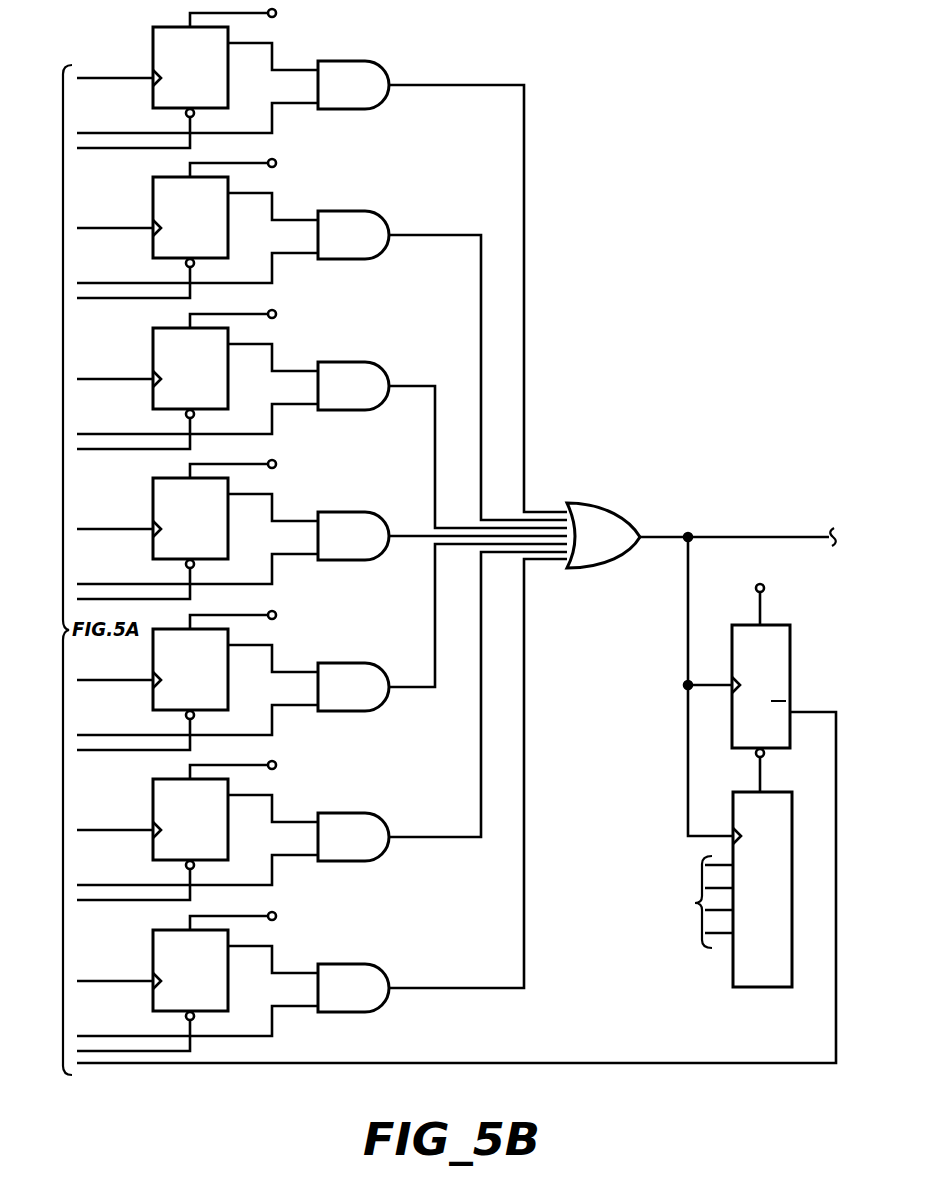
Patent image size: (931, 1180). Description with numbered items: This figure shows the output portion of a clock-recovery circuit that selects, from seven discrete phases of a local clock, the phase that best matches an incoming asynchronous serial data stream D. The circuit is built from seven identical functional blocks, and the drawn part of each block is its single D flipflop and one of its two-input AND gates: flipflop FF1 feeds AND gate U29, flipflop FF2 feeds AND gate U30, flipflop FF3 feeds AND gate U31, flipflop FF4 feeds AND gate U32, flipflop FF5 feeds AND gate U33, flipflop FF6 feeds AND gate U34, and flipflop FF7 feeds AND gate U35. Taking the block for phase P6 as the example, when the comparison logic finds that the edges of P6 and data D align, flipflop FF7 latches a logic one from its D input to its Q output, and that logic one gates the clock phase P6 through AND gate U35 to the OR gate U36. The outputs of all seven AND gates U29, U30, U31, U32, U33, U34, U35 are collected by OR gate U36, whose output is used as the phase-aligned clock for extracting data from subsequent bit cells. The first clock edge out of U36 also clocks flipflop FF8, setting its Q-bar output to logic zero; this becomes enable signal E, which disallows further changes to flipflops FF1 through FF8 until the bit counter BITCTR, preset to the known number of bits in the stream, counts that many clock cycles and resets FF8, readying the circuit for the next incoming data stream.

The D flipflop FF1 is at (198, 74).
The D flipflop FF2 is at (198, 224).
The D flipflop FF3 is at (198, 375).
The D flipflop FF4 is at (198, 525).
The D flipflop FF5 is at (198, 676).
The D flipflop FF6 is at (198, 826).
The flipflop FF7 is at (198, 977).
The flipflop FF8 is at (456, 800).
The AND gate U29 is at (322, 277).
The AND gate U30 is at (322, 356).
The AND gate U31 is at (322, 436).
The AND gate U32 is at (322, 539).
The AND gate U33 is at (322, 639).
The AND gate U34 is at (322, 718).
The AND gate U35 is at (322, 797).
The OR gate U36 is at (701, 535).
The bit counter BITCTR is at (680, 889).